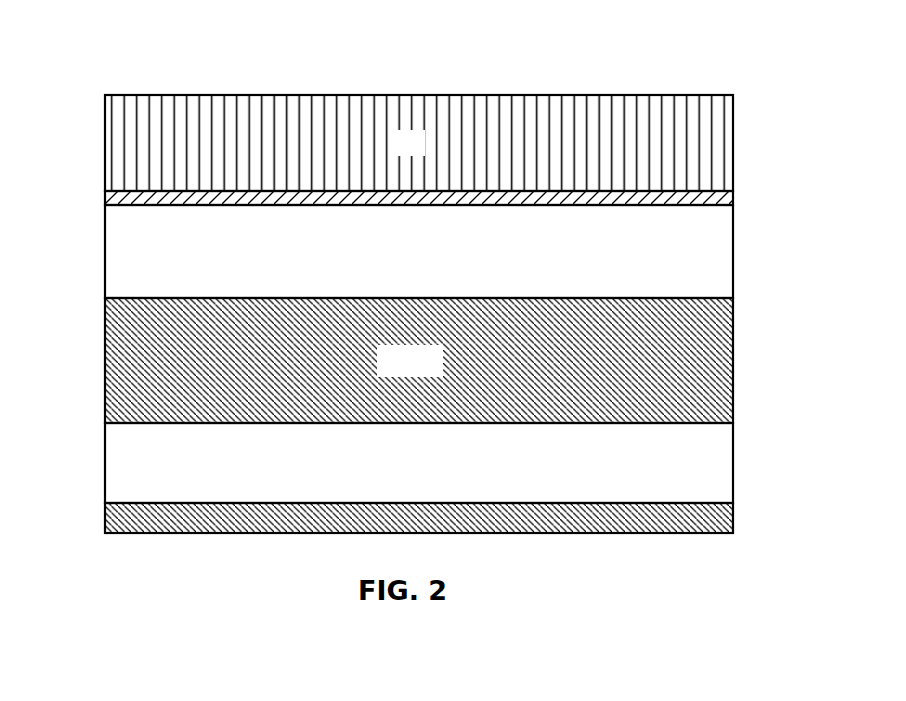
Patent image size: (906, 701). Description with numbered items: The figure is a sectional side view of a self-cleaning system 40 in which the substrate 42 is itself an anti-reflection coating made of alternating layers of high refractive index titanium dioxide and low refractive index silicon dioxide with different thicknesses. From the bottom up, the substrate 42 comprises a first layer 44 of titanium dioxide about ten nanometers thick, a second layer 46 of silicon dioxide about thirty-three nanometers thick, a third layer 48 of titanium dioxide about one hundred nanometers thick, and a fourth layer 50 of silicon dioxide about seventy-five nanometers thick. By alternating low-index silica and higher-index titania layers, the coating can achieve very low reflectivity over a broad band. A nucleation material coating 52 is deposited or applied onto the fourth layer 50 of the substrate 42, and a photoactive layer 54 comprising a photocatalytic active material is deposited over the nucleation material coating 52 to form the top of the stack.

The self-cleaning system 40 is at (134, 77).
The substrate 42 is at (105, 205).
The first layer 44 is at (733, 520).
The second layer 46 is at (423, 482).
The third layer 48 is at (423, 372).
The fourth layer 50 is at (423, 262).
The nucleation material coating 52 is at (105, 192).
The photoactive layer 54 is at (423, 153).